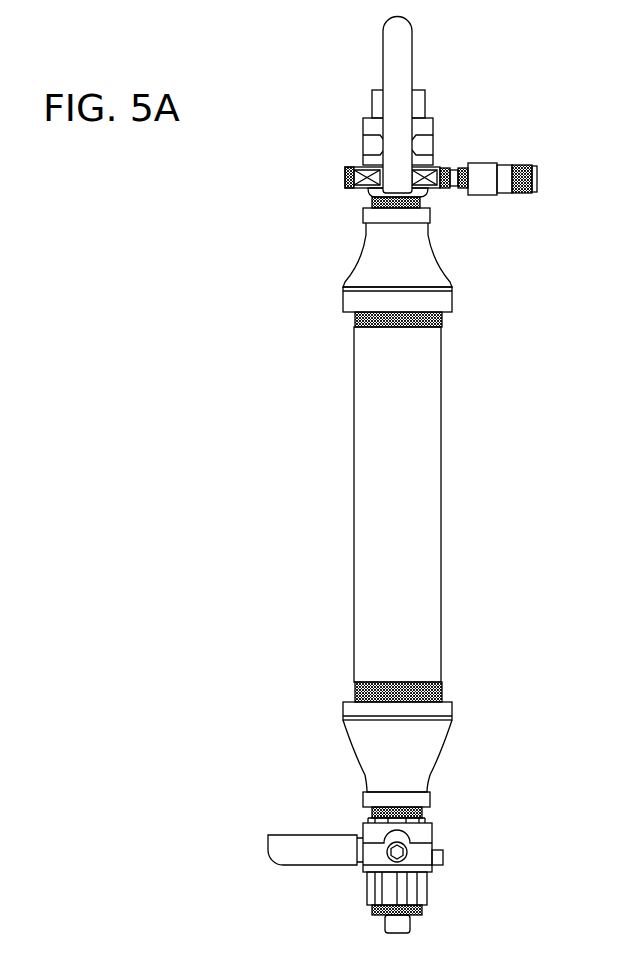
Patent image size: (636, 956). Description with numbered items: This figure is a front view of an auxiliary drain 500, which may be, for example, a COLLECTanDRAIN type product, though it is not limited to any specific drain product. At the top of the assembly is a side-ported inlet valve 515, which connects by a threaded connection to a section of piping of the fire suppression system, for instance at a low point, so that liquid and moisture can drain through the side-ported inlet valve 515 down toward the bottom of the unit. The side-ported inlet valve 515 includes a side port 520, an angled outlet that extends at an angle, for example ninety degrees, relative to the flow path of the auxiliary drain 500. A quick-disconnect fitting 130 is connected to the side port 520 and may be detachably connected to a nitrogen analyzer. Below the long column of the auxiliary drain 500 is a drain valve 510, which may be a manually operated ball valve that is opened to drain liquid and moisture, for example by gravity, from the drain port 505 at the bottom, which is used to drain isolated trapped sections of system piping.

The side-ported inlet valve 515 is at (425, 93).
The side port 520 is at (440, 170).
The quick-disconnect fitting 130 is at (485, 163).
The auxiliary drain 500 is at (440, 482).
The drain valve 510 is at (410, 848).
The drain port 505 is at (410, 927).